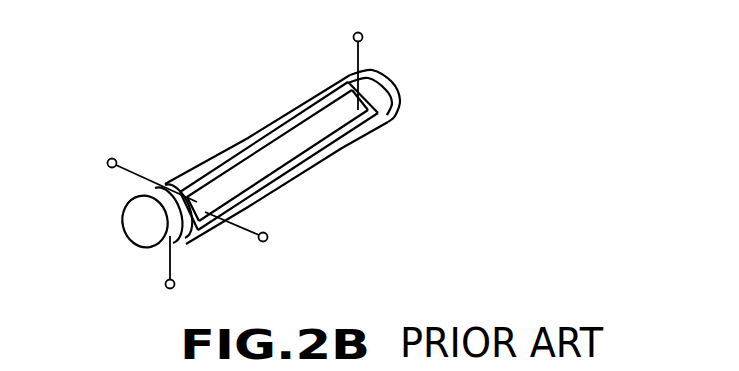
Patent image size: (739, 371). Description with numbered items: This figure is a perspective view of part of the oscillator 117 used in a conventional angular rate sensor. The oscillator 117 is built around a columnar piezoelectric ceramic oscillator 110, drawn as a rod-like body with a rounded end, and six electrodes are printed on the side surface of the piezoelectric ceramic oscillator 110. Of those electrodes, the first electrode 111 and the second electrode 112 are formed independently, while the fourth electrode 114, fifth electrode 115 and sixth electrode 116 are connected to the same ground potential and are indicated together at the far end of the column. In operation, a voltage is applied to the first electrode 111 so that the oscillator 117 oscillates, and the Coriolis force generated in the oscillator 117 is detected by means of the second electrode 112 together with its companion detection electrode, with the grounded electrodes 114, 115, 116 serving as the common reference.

The columnar piezoelectric ceramic oscillator 110 is at (133, 230).
The first electrode 111 is at (182, 234).
The second electrode 112 is at (247, 160).
The fourth electrode 114 is at (388, 123).
The fifth electrode 115 is at (360, 100).
The sixth electrode 116 is at (363, 97).
The oscillator 117 is at (306, 226).